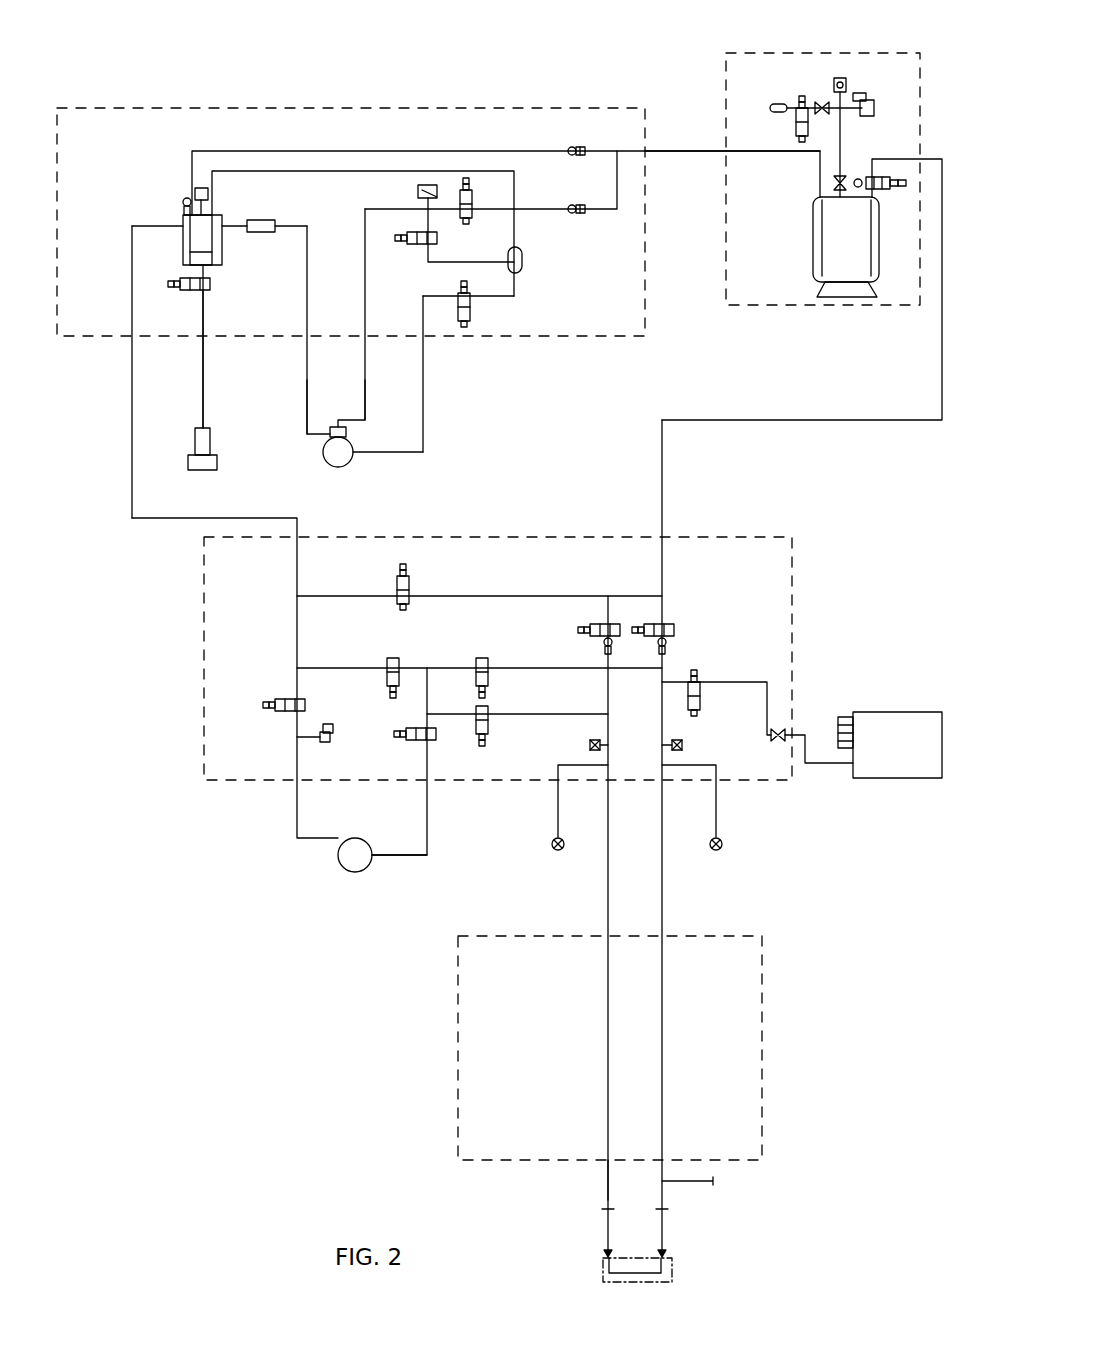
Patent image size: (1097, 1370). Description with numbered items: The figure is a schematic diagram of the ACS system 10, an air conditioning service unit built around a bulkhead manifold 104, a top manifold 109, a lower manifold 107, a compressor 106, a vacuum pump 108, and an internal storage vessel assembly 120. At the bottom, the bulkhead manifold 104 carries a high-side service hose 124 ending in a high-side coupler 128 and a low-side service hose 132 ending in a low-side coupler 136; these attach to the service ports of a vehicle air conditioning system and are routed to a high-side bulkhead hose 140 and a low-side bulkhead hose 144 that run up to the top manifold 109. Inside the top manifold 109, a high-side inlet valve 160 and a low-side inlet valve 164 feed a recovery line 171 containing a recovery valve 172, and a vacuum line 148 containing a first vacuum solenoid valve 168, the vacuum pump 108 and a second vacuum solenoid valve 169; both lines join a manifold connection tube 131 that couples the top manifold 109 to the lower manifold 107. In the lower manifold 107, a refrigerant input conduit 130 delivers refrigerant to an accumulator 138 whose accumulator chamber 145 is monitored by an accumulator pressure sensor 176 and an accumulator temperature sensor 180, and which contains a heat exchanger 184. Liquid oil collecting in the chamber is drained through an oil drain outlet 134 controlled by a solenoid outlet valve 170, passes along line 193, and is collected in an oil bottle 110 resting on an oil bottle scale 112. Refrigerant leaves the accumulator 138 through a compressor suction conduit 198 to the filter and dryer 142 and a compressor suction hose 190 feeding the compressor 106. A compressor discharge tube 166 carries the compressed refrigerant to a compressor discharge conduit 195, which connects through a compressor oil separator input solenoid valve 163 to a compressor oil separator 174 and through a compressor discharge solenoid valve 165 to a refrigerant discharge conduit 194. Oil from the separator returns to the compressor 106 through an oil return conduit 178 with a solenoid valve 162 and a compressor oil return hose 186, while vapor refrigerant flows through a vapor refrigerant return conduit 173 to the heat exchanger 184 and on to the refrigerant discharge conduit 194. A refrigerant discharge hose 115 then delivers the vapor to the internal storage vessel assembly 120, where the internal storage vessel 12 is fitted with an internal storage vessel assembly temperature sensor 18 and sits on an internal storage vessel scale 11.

The ACS system 10 is at (148, 82).
The lower manifold 107 is at (245, 108).
The vapor refrigerant return conduit 173 is at (320, 171).
The refrigerant discharge conduit 194 is at (405, 151).
The accumulator pressure sensor 176 is at (196, 188).
The accumulator temperature sensor 180 is at (183, 202).
The heat exchanger 184 is at (190, 243).
The oil drain outlet 134 is at (200, 270).
The refrigerant input conduit 130 is at (132, 285).
The solenoid outlet valve 170 is at (192, 292).
The line 193 is at (206, 318).
The filter and dryer 142 is at (268, 220).
The accumulator chamber 145 is at (215, 240).
The accumulator 138 is at (222, 258).
The compressor suction conduit 198 is at (307, 292).
The compressor discharge solenoid valve 165 is at (473, 200).
The compressor oil separator input solenoid valve 163 is at (437, 238).
The compressor oil separator 174 is at (522, 260).
The compressor discharge conduit 195 is at (365, 270).
The oil return conduit 178 is at (423, 325).
The solenoid valve 162 is at (470, 312).
The internal storage vessel assembly 120 is at (755, 53).
The refrigerant discharge hose 115 is at (683, 151).
The internal storage vessel assembly temperature sensor 18 is at (858, 178).
The internal storage vessel 12 is at (813, 230).
The internal storage vessel scale 11 is at (830, 290).
The oil bottle scale 112 is at (188, 460).
The oil bottle 110 is at (210, 440).
The manifold connection tube 131 is at (168, 518).
The compressor suction hose 190 is at (307, 404).
The compressor discharge tube 166 is at (365, 405).
The compressor oil return hose 186 is at (423, 413).
The compressor 106 is at (323, 460).
The top manifold 109 is at (733, 537).
The recovery valve 172 is at (393, 658).
The low-side inlet valve 164 is at (482, 658).
The second vacuum solenoid valve 169 is at (287, 699).
The recovery line 171 is at (427, 672).
The first vacuum solenoid valve 168 is at (400, 738).
The high-side inlet valve 160 is at (490, 738).
The vacuum pump 108 is at (355, 872).
The vacuum line 148 is at (417, 857).
The high-side bulkhead hose 140 is at (608, 898).
The low-side bulkhead hose 144 is at (662, 896).
The bulkhead manifold 104 is at (757, 936).
The high-side service hose 124 is at (608, 1175).
The low-side service hose 132 is at (662, 1175).
The high-side coupler 128 is at (608, 1210).
The low-side coupler 136 is at (662, 1210).